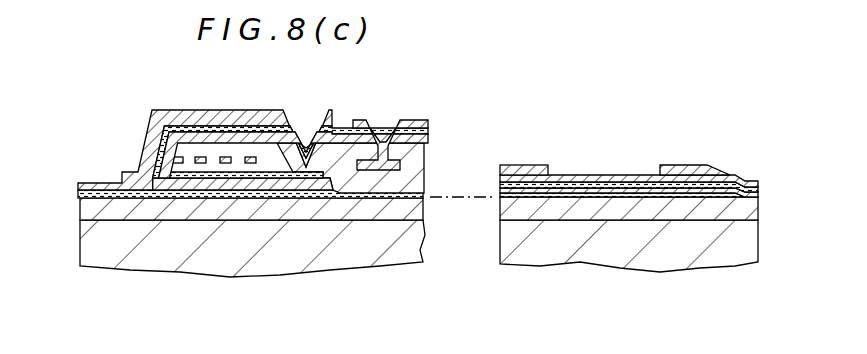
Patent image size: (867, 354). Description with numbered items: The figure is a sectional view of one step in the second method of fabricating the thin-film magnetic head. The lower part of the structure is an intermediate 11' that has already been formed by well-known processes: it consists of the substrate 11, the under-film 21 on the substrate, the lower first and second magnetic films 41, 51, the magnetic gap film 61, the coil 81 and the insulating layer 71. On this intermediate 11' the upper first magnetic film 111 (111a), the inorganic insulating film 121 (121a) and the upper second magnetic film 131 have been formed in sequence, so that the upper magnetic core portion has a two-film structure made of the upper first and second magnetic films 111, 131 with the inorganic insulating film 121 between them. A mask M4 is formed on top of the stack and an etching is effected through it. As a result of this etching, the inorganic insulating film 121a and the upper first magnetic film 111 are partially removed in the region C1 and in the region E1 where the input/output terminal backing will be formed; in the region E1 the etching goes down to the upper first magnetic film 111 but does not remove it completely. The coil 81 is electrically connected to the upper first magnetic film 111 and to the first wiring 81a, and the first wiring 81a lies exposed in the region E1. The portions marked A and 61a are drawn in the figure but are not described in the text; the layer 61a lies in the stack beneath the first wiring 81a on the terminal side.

The substrate 11 is at (419, 265).
The intermediate 11' is at (56, 270).
The under-film 21 is at (422, 200).
The lower second magnetic film 51 is at (160, 196).
The lower first magnetic film 41 is at (178, 184).
The magnetic gap film 61 is at (236, 175).
The coil 81 is at (268, 182).
The insulating layer 71 is at (335, 150).
The upper second magnetic film 131 is at (165, 122).
The upper first magnetic film 111 is at (189, 129).
The inorganic insulating film 121 is at (231, 138).
The mask M4 is at (286, 110).
The region C1 is at (348, 125).
The region A is at (120, 172).
The upper first magnetic film 111a is at (546, 180).
The inorganic insulating film 121a is at (598, 176).
The region E1 is at (640, 174).
The first wiring 81a is at (548, 194).
The thin film layer 61a is at (604, 194).